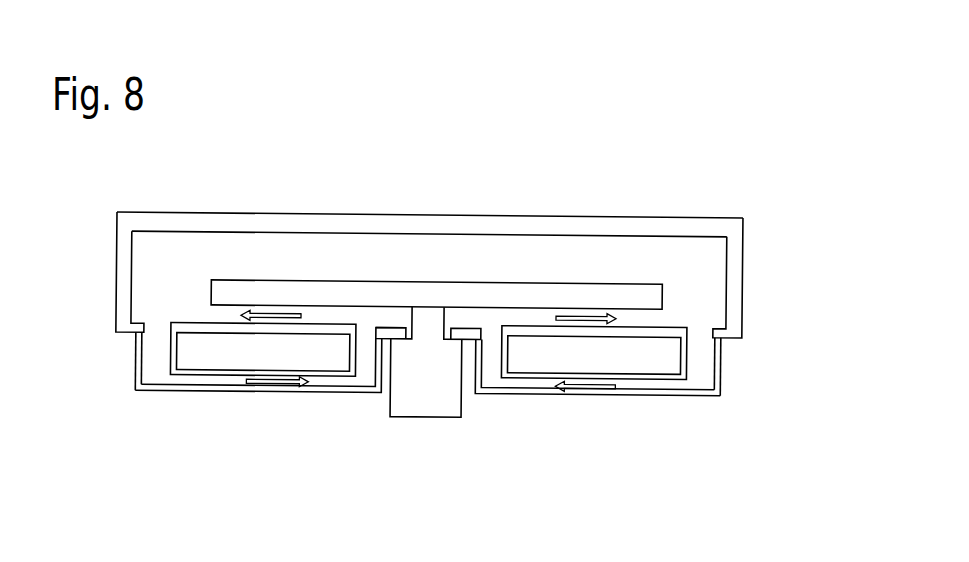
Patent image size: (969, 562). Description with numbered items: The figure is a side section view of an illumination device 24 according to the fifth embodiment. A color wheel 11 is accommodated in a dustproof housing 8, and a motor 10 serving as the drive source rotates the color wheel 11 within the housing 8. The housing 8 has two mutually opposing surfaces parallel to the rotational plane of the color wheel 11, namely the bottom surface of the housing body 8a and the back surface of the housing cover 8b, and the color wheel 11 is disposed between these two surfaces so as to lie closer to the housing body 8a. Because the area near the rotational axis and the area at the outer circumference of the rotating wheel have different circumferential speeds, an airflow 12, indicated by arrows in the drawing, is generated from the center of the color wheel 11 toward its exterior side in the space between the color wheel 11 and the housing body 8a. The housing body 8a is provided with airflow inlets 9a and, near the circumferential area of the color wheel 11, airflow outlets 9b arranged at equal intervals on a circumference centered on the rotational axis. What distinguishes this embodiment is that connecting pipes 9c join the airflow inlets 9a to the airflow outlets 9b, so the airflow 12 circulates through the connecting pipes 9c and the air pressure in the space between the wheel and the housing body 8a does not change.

The housing 8 is at (465, 242).
The housing body 8a is at (746, 278).
The housing cover 8b is at (720, 222).
The airflow inlet 9a is at (378, 325).
The airflow outlet 9b is at (146, 324).
The connecting pipe 9c is at (209, 383).
The motor 10 is at (425, 405).
The color wheel 11 is at (400, 287).
The airflow 12 is at (289, 316).
The illumination device 24 is at (669, 135).